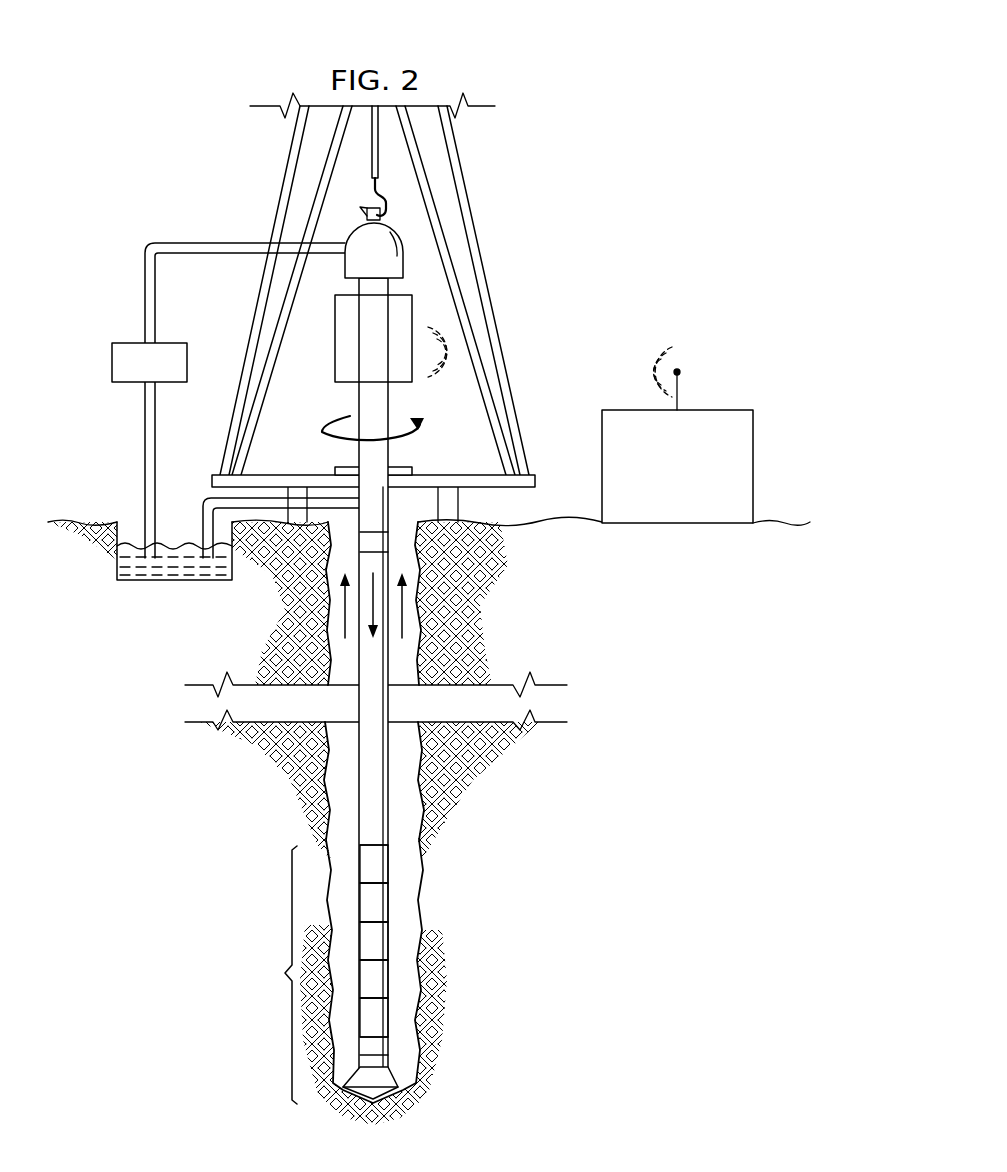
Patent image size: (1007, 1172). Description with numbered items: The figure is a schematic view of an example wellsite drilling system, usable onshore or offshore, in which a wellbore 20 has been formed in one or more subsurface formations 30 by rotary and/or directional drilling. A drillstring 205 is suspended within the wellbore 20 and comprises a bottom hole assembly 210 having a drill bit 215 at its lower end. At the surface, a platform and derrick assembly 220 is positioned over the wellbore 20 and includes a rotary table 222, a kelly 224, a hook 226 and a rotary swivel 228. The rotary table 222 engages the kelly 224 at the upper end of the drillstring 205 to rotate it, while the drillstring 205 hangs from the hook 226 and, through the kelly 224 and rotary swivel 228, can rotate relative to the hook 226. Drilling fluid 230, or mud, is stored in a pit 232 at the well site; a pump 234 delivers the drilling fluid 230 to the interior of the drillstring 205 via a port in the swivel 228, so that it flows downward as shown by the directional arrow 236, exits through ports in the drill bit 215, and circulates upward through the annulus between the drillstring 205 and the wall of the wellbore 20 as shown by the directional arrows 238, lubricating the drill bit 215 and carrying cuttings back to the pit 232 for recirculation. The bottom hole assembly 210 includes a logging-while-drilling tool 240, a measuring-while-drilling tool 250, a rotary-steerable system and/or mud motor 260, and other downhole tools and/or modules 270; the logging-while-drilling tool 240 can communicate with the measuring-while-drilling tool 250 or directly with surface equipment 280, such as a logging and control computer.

The platform and derrick assembly 220 is at (530, 63).
The hook 226 is at (390, 205).
The rotary swivel 228 is at (401, 255).
The kelly 224 is at (359, 405).
The rotary table 222 is at (335, 470).
The pump 234 is at (112, 362).
The pit 232 is at (174, 532).
The drilling fluid 230 is at (173, 578).
The directional arrows 238 is at (345, 622).
The drillstring 205 is at (392, 517).
The wellbore 20 is at (405, 553).
The directional arrow 236 is at (376, 612).
The subsurface formations 30 is at (463, 758).
The surface equipment 280 is at (695, 509).
The bottom hole assembly 210 is at (271, 975).
The downhole tools and/or modules 270 is at (390, 865).
The logging-while-drilling (LWD) tool 240 is at (390, 903).
The measuring-while-drilling (MWD) tool 250 is at (390, 942).
The rotary-steerable system and/or mud motor 260 is at (390, 1025).
The drill bit 215 is at (417, 1088).